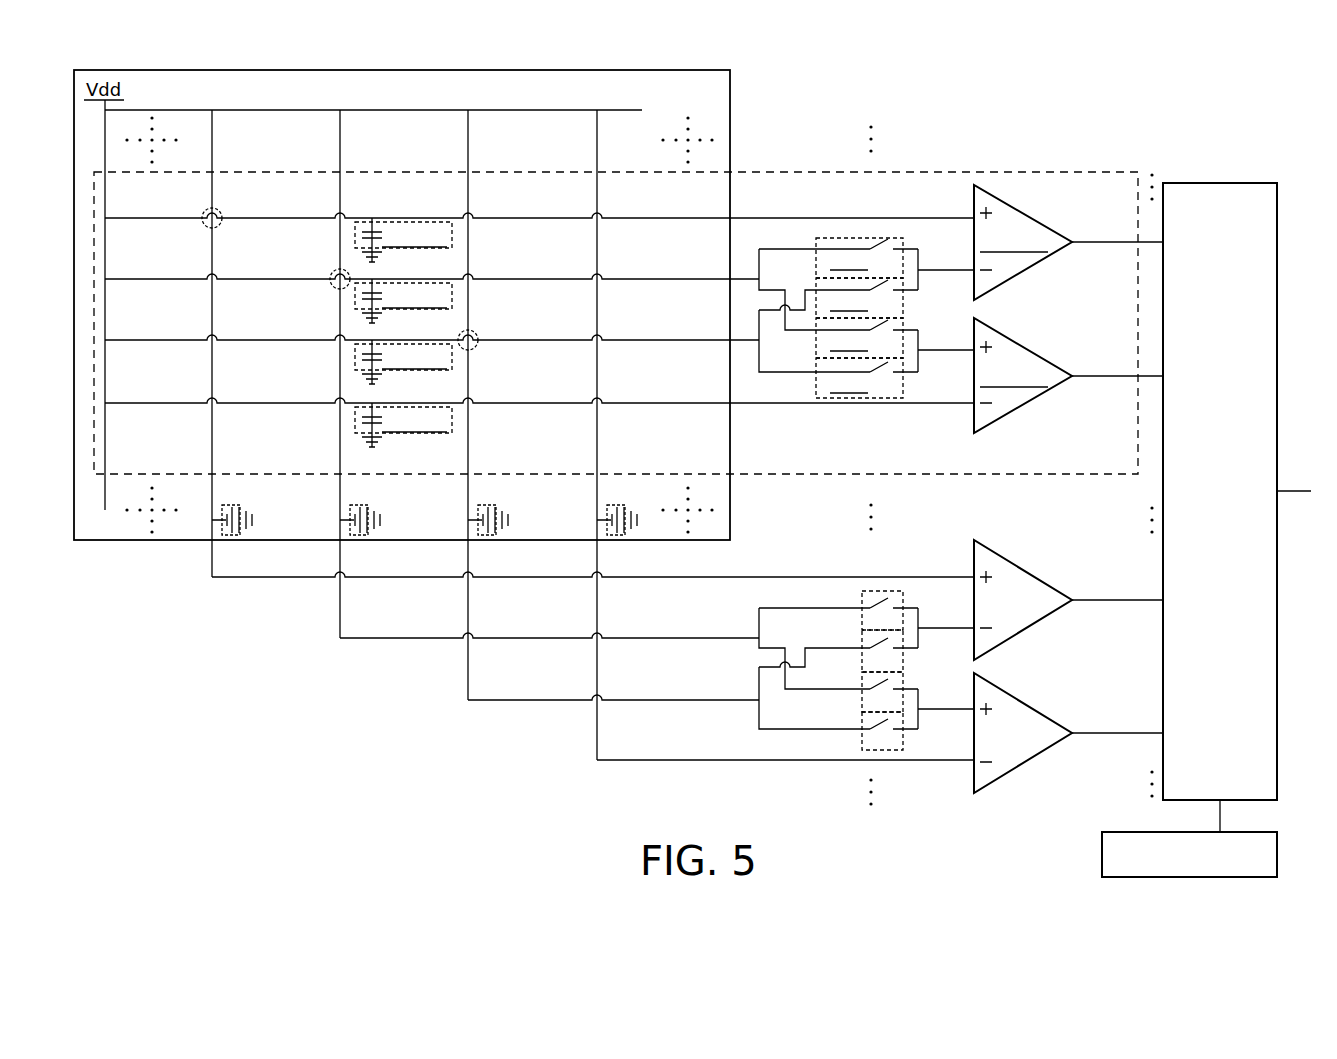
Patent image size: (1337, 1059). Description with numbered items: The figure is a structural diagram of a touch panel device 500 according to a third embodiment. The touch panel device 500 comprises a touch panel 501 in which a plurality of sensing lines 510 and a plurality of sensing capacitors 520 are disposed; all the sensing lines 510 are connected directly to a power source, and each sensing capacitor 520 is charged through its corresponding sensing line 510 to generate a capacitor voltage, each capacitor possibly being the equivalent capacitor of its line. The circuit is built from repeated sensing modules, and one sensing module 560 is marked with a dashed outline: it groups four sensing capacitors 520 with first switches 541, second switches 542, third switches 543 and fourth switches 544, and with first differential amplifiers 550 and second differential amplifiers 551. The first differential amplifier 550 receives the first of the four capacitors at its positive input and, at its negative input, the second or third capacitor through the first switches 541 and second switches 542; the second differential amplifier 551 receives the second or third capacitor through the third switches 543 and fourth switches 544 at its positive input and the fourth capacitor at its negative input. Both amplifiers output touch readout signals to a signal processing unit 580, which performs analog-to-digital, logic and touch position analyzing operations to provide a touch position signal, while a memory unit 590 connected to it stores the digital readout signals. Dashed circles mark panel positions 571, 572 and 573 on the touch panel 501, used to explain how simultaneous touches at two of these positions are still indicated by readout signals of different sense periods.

The touch panel device 500 is at (1205, 121).
The touch panel 501 is at (731, 96).
The sensing lines 510 is at (213, 153).
The sensing capacitors 520 is at (385, 250).
The first switches 541 is at (903, 242).
The second switches 542 is at (903, 298).
The third switches 543 is at (903, 322).
The fourth switches 544 is at (903, 395).
The first differential amplifiers 550 is at (1018, 218).
The second differential amplifiers 551 is at (1018, 352).
The sensing module 560 is at (1077, 172).
The panel position 571 is at (206, 212).
The panel position 572 is at (333, 273).
The panel position 573 is at (474, 332).
The signal processing unit 580 is at (1216, 183).
The memory unit 590 is at (1130, 832).